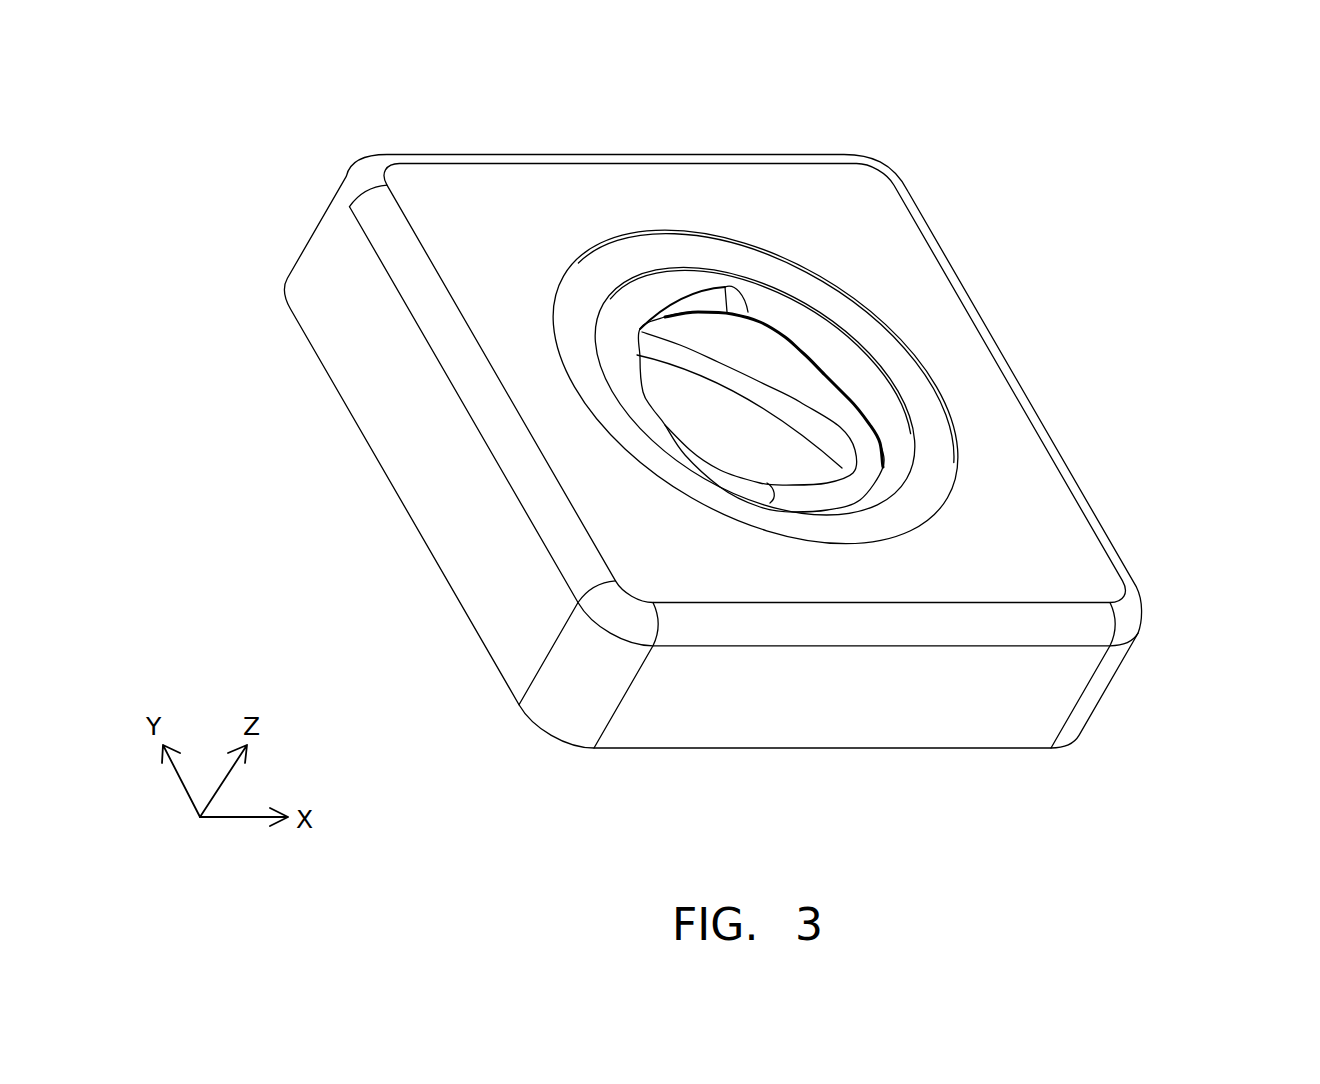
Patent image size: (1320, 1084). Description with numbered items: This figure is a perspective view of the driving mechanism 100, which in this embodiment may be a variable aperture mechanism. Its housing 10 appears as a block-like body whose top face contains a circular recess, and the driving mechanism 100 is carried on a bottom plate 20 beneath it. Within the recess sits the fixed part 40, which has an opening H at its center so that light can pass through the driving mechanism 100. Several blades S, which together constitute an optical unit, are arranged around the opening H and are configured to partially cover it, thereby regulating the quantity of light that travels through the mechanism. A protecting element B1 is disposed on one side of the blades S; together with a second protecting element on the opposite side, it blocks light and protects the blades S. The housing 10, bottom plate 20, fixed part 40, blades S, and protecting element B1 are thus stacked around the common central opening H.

The driving mechanism 100 is at (1256, 90).
The housing 10 is at (972, 365).
The bottom plate 20 is at (808, 417).
The fixed part 40 is at (817, 380).
The protecting element B1 is at (606, 267).
The opening H is at (715, 417).
The blades S is at (754, 303).